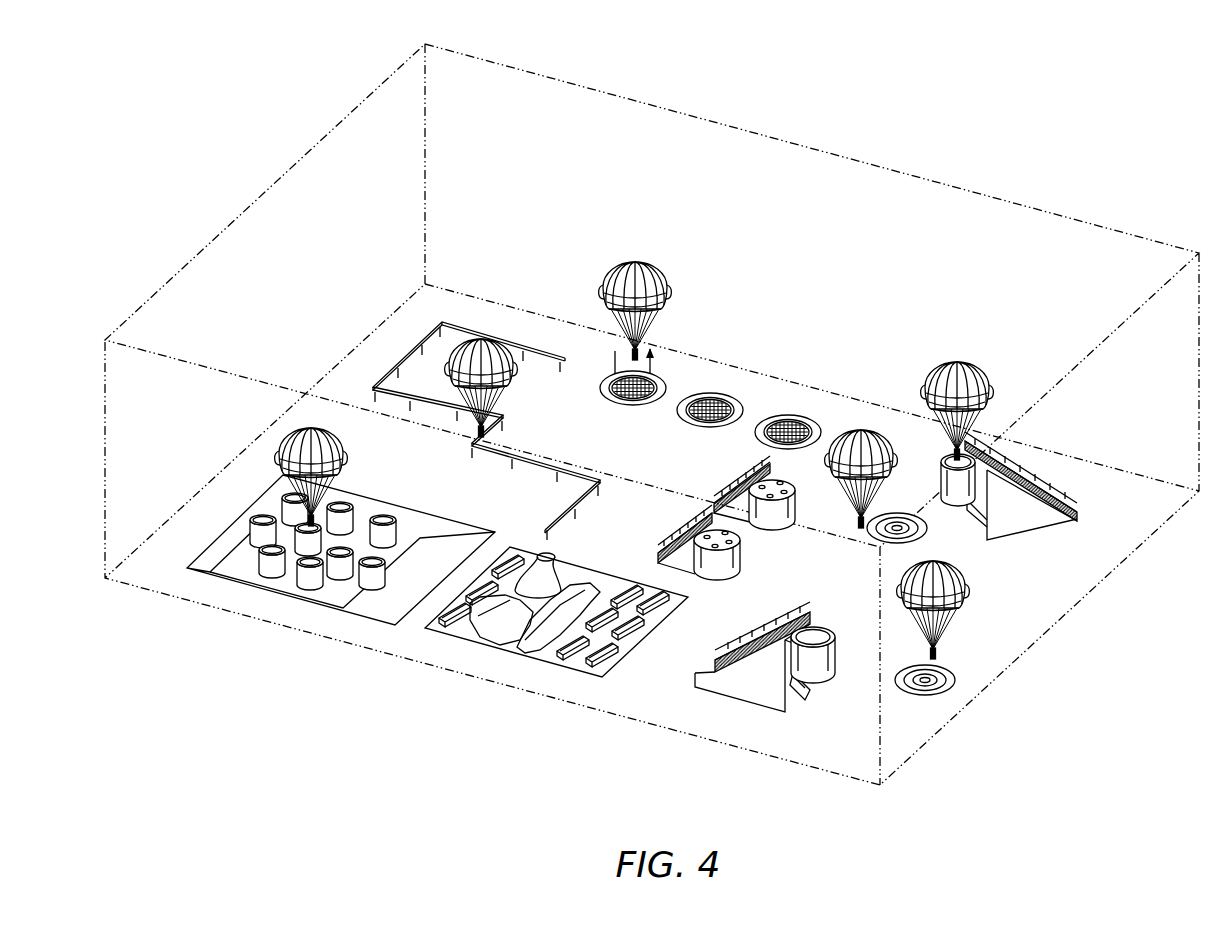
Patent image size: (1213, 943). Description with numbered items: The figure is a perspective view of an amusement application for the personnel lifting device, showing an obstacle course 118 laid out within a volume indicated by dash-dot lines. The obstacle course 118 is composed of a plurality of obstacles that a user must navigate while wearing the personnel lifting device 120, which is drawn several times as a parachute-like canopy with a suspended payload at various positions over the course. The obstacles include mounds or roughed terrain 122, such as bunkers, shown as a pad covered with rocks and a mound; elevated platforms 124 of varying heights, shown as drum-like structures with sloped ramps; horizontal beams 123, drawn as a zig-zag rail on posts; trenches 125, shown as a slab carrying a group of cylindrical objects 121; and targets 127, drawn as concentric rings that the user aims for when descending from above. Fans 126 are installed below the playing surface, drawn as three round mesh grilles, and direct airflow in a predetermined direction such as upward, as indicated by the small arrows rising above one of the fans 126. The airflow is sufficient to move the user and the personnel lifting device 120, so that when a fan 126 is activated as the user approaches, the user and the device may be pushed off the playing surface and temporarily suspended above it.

The obstacle course 118 is at (863, 139).
The personnel lifting device 120 is at (294, 424).
The barrels 121 is at (323, 541).
The mounds or roughed terrain 122 is at (592, 660).
The horizontal beams 123 is at (403, 353).
The elevated platforms 124 is at (750, 693).
The trenches 125 is at (242, 572).
The fans 126 is at (768, 417).
The targets 127 is at (876, 540).